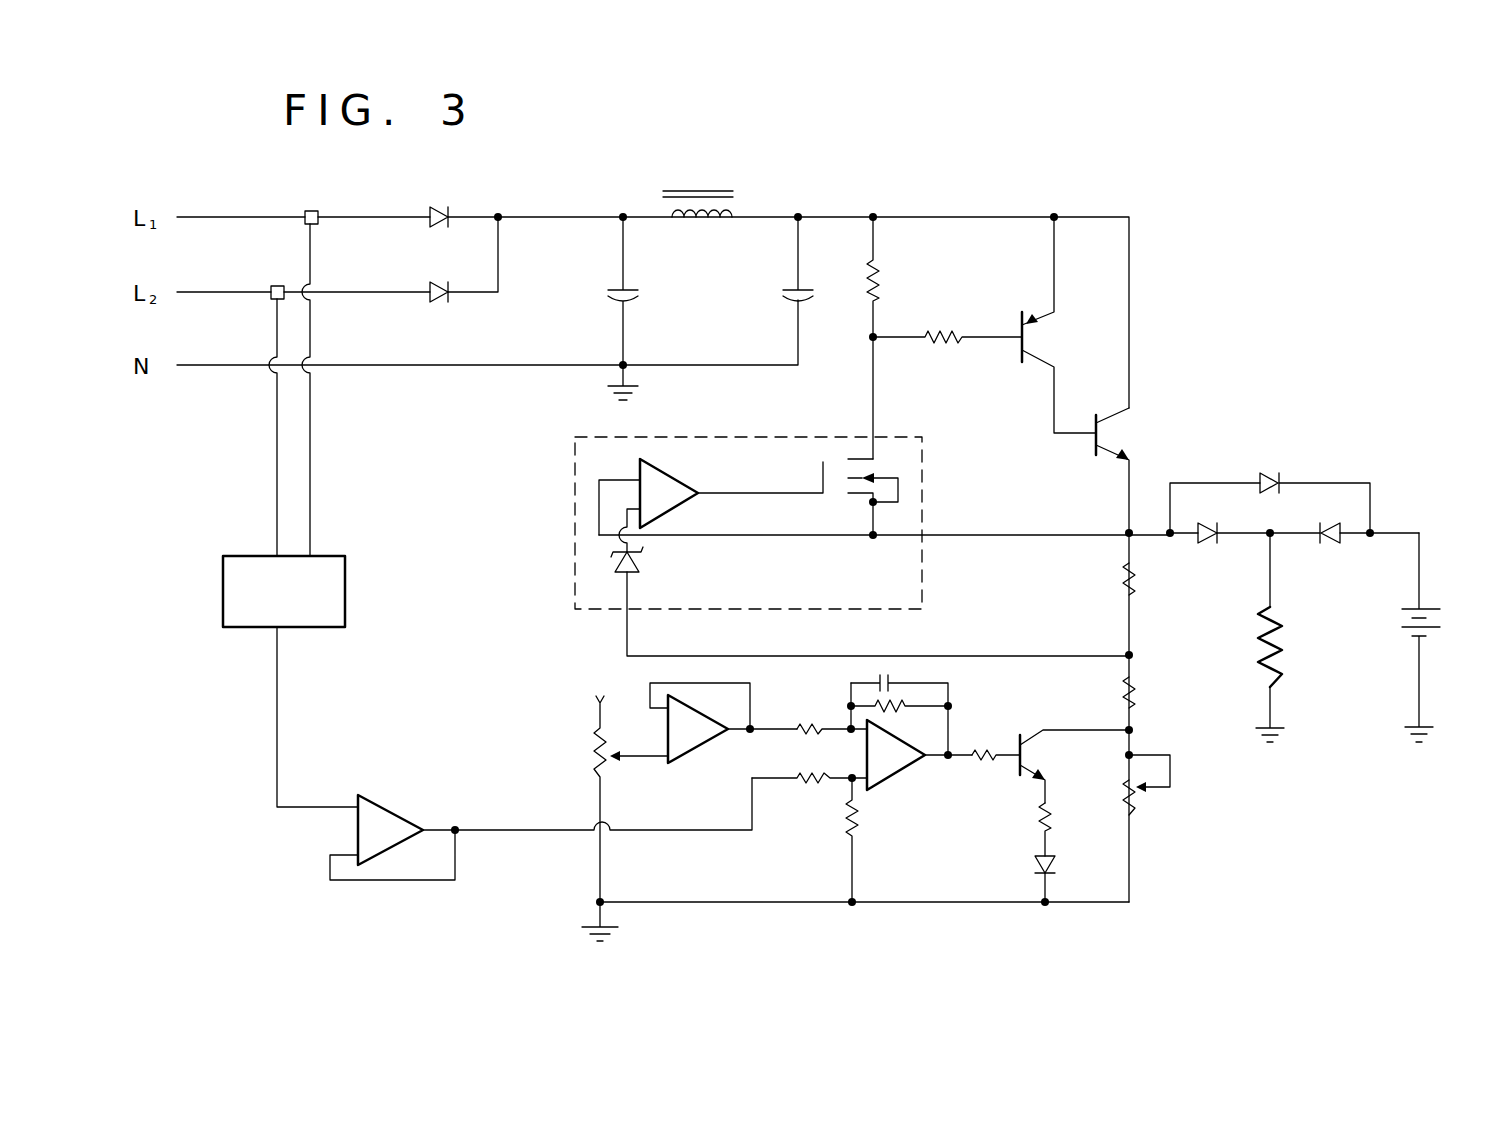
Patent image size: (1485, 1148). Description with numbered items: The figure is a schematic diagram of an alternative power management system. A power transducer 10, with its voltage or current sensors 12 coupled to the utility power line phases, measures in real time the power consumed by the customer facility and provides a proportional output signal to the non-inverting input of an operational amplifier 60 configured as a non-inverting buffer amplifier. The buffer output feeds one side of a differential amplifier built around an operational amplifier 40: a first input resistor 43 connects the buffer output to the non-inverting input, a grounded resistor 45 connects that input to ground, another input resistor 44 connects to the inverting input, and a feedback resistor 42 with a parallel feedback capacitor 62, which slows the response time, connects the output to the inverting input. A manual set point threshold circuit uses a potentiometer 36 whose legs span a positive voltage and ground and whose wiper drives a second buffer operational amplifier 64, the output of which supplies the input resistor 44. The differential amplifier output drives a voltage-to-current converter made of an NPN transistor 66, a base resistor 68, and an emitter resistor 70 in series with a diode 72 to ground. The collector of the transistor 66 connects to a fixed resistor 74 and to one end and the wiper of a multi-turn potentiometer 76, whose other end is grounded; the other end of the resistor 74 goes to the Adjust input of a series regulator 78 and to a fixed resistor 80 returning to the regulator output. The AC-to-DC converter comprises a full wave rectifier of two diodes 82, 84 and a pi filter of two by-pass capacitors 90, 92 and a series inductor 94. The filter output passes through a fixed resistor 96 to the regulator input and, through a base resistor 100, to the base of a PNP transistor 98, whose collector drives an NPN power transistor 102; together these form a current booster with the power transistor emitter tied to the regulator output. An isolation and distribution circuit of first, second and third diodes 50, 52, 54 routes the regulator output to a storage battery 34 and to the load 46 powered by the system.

The power transducer 10 is at (223, 605).
The voltage or current sensors 12 is at (314, 211).
The storage battery 34 is at (1419, 609).
The potentiometer 36 is at (596, 744).
The operational amplifier 40 is at (905, 765).
The feedback resistor 42 is at (893, 706).
The first input resistor 43 is at (820, 783).
The input resistor 44 is at (806, 724).
The grounded resistor 45 is at (858, 820).
The load 46 is at (1266, 687).
The first diode 50 is at (1208, 543).
The second diode 52 is at (1330, 543).
The third diode 54 is at (1274, 473).
The operational amplifier 60 is at (388, 796).
The feedback capacitor 62 is at (887, 675).
The operational amplifier 64 is at (700, 752).
The NPN transistor 66 is at (1020, 737).
The base resistor 68 is at (985, 762).
The emitter resistor 70 is at (1051, 813).
The diode 72 is at (1056, 863).
The fixed resistor 74 is at (1135, 680).
The multi-turn potentiometer 76 is at (1135, 800).
The series regulator 78 is at (924, 578).
The fixed resistor 80 is at (1123, 583).
The diode 82 is at (436, 207).
The diode 84 is at (436, 282).
The by-pass capacitor 90 is at (640, 290).
The by-pass capacitor 92 is at (782, 290).
The series choke or inductor 94 is at (733, 191).
The fixed resistor 96 is at (879, 264).
The PNP transistor 98 is at (1022, 314).
The base resistor 100 is at (937, 331).
The NPN power transistor 102 is at (1096, 417).